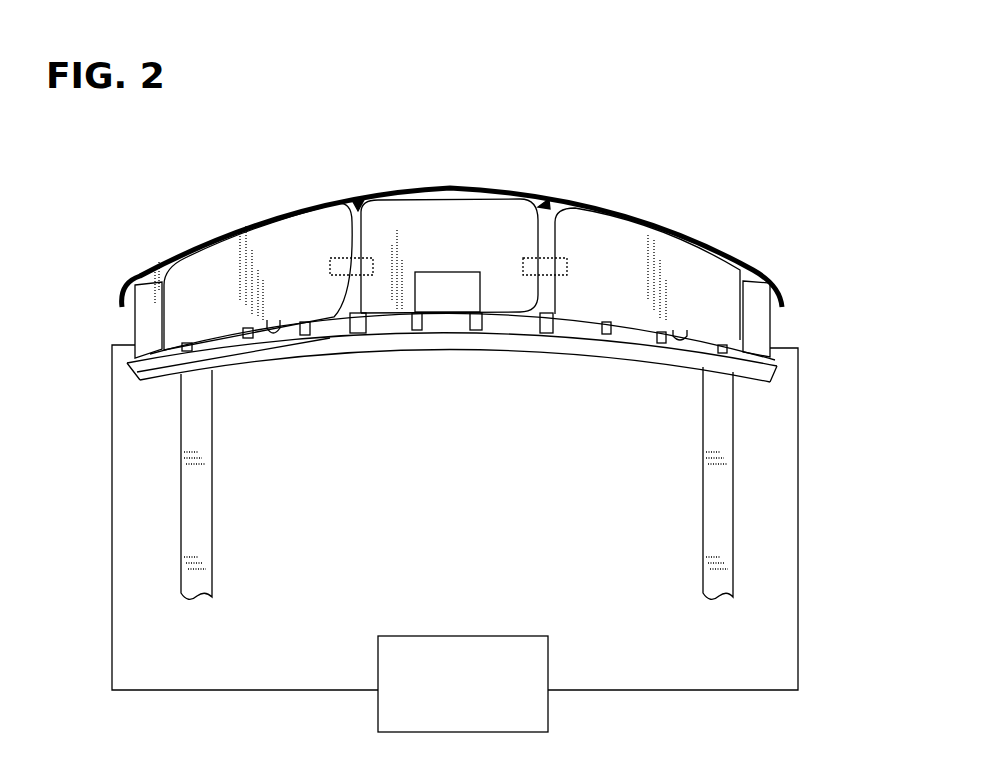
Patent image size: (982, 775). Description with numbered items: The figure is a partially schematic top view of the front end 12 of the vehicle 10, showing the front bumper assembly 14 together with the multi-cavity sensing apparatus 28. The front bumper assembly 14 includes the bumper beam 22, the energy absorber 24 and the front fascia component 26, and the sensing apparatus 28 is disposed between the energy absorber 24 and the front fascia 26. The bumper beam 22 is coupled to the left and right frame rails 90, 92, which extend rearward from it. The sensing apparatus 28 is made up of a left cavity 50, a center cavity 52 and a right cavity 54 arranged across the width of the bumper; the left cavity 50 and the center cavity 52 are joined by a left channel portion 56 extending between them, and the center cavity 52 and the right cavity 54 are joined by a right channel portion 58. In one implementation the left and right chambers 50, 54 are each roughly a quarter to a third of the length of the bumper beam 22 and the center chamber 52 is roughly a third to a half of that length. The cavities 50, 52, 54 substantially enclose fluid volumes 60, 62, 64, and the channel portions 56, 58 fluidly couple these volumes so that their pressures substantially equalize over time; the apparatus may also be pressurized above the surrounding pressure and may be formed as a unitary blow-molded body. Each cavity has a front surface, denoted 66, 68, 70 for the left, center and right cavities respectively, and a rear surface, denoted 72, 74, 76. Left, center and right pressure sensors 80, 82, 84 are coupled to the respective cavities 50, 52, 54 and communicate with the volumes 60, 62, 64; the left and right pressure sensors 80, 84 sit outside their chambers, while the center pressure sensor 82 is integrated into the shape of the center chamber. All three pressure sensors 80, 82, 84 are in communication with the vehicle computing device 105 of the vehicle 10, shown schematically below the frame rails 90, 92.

The vehicle 10 is at (679, 109).
The front end 12 is at (576, 192).
The front bumper assembly 14 is at (98, 388).
The bumper beam 22 is at (455, 349).
The energy absorber 24 is at (773, 378).
The front fascia component 26 is at (472, 191).
The multi-cavity sensing apparatus 28 is at (548, 201).
The left cavity 50 is at (219, 344).
The center cavity 52 is at (357, 197).
The right cavity 54 is at (621, 332).
The left channel portion 56 is at (352, 272).
The right channel portion 58 is at (545, 272).
The fluid volume 60 is at (306, 259).
The fluid volume 62 is at (523, 244).
The fluid volume 64 is at (619, 263).
The front surface 66 is at (262, 214).
The front surface 68 is at (438, 187).
The front surface 70 is at (668, 230).
The rear surface 72 is at (276, 320).
The rear surface 74 is at (404, 312).
The rear surface 76 is at (686, 328).
The left pressure sensor 80 is at (146, 327).
The center pressure sensor 82 is at (460, 272).
The right pressure sensor 84 is at (752, 318).
The left frame rail 90 is at (213, 546).
The right frame rail 92 is at (702, 552).
The vehicle computing device 105 is at (484, 697).